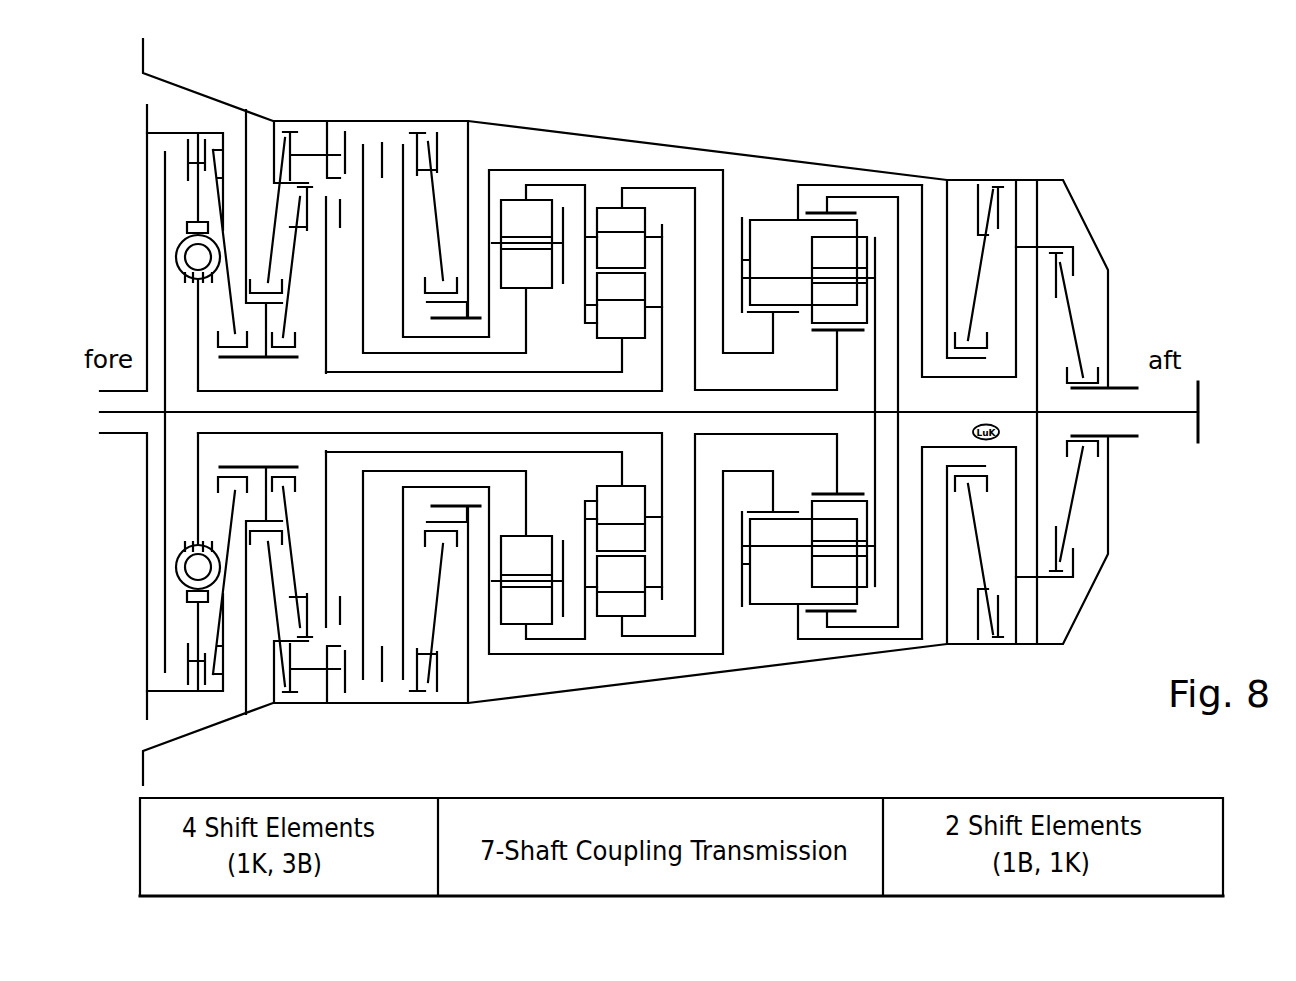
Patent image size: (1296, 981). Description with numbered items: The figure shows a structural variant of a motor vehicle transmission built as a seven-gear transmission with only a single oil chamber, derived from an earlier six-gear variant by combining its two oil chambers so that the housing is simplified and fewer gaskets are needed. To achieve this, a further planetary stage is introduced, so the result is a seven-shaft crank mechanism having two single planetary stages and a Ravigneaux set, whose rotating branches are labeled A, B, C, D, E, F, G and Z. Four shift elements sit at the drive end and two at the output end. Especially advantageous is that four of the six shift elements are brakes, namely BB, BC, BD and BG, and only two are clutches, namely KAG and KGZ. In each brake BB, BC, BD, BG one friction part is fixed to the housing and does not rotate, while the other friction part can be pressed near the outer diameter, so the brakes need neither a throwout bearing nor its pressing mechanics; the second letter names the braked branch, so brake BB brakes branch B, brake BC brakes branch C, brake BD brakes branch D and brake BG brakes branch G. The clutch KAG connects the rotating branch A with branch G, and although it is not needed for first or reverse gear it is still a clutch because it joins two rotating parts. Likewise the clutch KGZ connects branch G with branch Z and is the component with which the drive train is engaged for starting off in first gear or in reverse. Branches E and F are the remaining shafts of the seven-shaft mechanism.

The clutch KAG is at (173, 152).
The brake BB is at (336, 200).
The brake BC is at (372, 155).
The brake BD is at (413, 147).
The brake BG is at (1008, 203).
The clutch KGZ is at (1045, 270).
The branch A is at (430, 412).
The branch B is at (581, 412).
The branch C is at (544, 412).
The branch D is at (637, 395).
The branch E is at (838, 412).
The branch F is at (807, 412).
The branch G is at (843, 412).
The branch Z is at (905, 412).